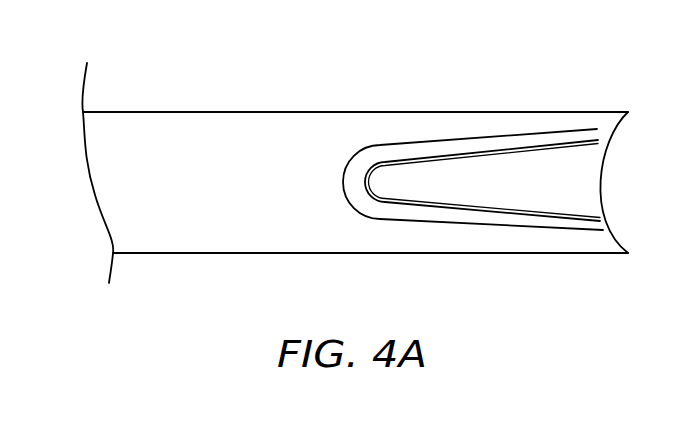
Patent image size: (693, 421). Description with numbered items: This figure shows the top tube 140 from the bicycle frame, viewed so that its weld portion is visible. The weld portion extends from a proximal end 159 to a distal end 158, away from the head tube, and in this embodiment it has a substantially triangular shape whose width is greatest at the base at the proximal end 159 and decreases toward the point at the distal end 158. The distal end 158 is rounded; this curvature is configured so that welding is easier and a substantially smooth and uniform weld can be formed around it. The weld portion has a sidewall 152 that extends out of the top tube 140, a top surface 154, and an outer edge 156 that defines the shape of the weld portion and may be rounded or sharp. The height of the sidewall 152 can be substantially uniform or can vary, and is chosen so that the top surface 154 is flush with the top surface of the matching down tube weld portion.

The top tube 140 is at (386, 149).
The sidewall 152 is at (412, 150).
The top surface 154 is at (527, 188).
The outer edge 156 is at (513, 152).
The distal end 158 is at (345, 182).
The proximal end 159 is at (593, 176).